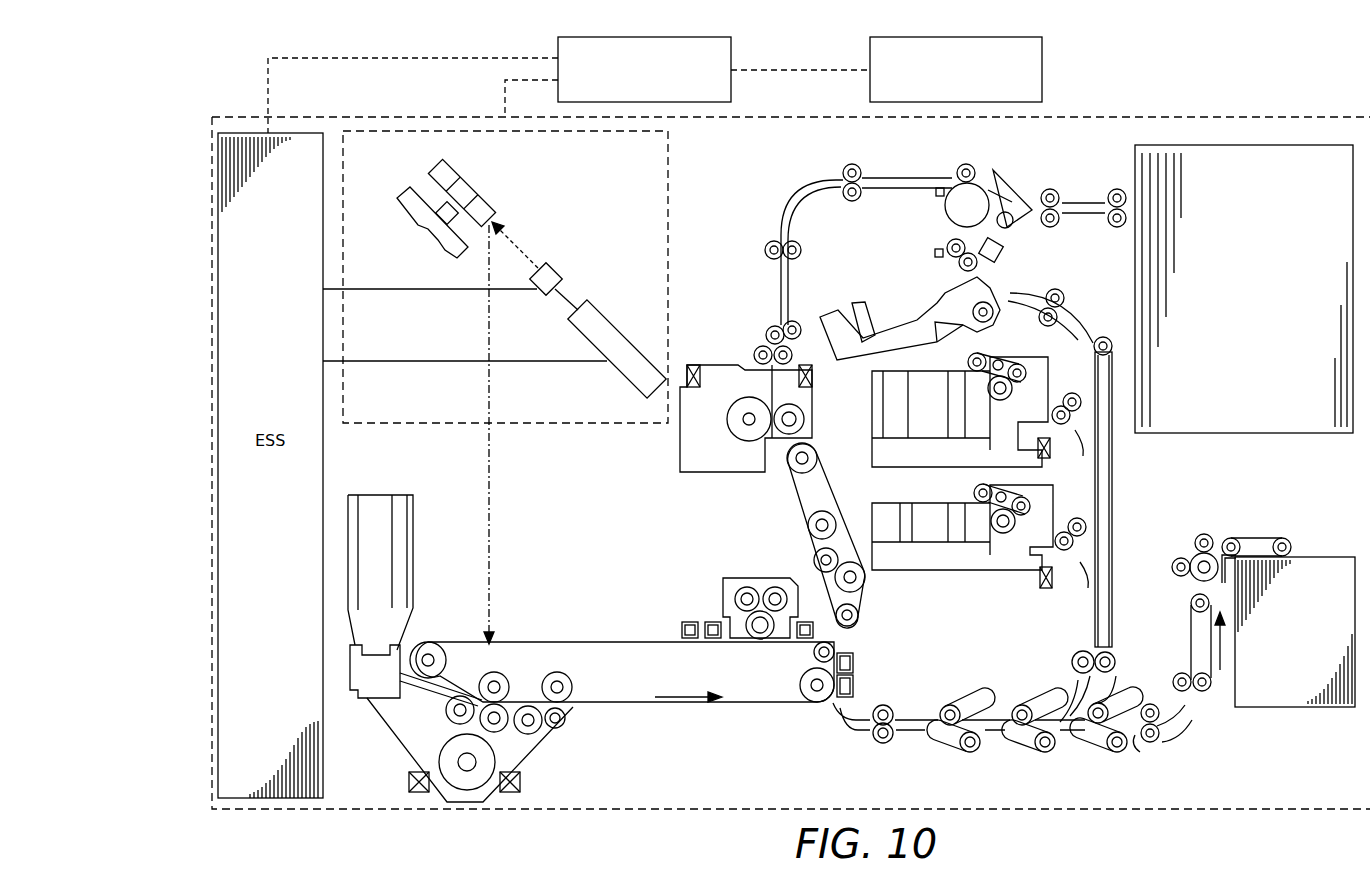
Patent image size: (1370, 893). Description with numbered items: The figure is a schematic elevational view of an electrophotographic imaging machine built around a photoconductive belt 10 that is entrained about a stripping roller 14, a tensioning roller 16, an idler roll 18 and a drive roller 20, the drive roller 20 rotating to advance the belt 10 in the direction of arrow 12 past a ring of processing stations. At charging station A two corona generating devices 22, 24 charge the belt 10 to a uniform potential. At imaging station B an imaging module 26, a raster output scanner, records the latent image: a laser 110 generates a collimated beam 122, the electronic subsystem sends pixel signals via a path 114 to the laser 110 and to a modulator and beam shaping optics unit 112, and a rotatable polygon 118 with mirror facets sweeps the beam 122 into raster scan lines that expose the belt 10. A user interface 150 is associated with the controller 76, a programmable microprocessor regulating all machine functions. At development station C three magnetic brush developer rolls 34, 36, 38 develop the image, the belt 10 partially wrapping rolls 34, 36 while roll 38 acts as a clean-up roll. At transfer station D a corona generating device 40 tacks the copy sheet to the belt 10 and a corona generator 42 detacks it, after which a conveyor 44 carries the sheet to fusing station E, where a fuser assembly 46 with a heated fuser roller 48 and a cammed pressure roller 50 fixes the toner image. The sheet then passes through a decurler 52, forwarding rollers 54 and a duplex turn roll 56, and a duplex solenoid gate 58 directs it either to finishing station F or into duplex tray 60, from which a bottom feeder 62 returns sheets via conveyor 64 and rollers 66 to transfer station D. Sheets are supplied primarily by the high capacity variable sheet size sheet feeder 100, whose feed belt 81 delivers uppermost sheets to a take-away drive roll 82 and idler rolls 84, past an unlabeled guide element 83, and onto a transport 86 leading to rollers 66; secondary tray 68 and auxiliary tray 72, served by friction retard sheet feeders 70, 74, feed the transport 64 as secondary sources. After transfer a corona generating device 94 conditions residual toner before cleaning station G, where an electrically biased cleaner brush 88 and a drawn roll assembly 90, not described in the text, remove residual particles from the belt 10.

The photoconductive belt 10 is at (623, 706).
The arrow 12 is at (688, 714).
The stripping roller 14 is at (813, 656).
The tensioning roller 16 is at (426, 646).
The idler roll 18 is at (557, 672).
The drive roller 20 is at (818, 703).
The corona generating device 22 is at (713, 625).
The corona generating device 24 is at (686, 628).
The imaging module 26 is at (570, 428).
The magnetic brush developer roll 34 is at (448, 714).
The magnetic brush developer roll 36 is at (498, 732).
The developer roll 38 is at (558, 728).
The corona generating device 40 is at (855, 688).
The corona generator 42 is at (855, 663).
The conveyor 44 is at (800, 502).
The fuser assembly 46 is at (723, 362).
The heated fuser roller 48 is at (729, 422).
The pressure roller 50 is at (805, 419).
The decurler 52 is at (768, 340).
The forwarding rollers 54 is at (773, 240).
The duplex turn roll 56 is at (948, 220).
The duplex solenoid gate 58 is at (1015, 196).
The duplex tray 60 is at (903, 326).
The bottom feeder 62 is at (986, 324).
The conveyor 64 is at (1114, 502).
The rollers 66 is at (955, 704).
The secondary tray 68 is at (912, 463).
The sheet feeder 70 is at (1030, 355).
The auxiliary tray 72 is at (940, 563).
The sheet feeder 74 is at (1012, 488).
The controller 76 is at (548, 40).
The feed belt 81 is at (1258, 538).
The take-away drive roll 82 is at (1193, 558).
The guide 83 is at (1222, 554).
The idler rolls 84 is at (1199, 534).
The transport 86 is at (1190, 630).
The cleaner brush 88 is at (752, 638).
The roller assembly 90 is at (774, 588).
The corona generating device 94 is at (815, 632).
The high capacity variable sheet size sheet feeder 100 is at (1328, 556).
The laser 110 is at (626, 372).
The modulator and beam shaping optics unit 112 is at (558, 268).
The signal path 114 is at (512, 240).
The rotatable polygon 118 is at (470, 187).
The beam 122 is at (492, 572).
The user interface 150 is at (1042, 75).
The charging station A is at (693, 604).
The imaging station B is at (632, 606).
The development station C is at (548, 753).
The transfer station D is at (858, 678).
The fusing station E is at (686, 478).
The finishing station F is at (1200, 442).
The cleaning station G is at (758, 568).